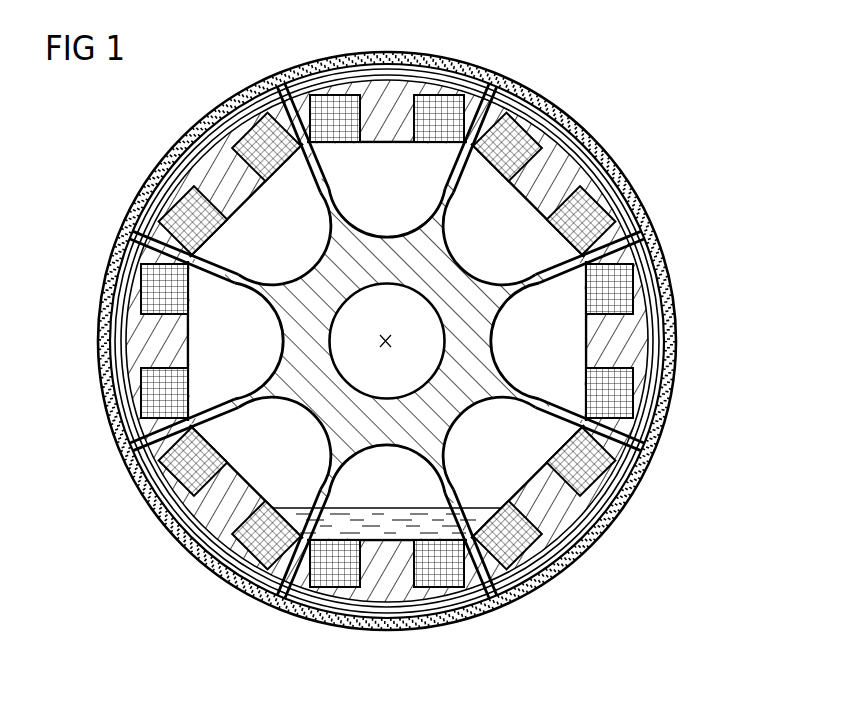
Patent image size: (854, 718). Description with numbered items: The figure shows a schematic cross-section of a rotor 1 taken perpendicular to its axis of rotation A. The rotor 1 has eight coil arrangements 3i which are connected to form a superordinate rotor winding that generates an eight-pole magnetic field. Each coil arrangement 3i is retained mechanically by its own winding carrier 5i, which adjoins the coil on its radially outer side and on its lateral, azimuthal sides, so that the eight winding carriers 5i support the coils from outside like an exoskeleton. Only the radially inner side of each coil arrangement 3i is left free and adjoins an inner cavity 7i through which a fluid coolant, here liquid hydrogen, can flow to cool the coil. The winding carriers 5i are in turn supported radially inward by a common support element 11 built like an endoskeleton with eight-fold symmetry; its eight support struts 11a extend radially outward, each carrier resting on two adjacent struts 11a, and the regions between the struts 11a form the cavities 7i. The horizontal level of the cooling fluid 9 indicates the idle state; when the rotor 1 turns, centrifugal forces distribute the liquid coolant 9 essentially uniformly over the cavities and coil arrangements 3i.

The rotor 1 is at (703, 152).
The coil arrangement 3i is at (591, 213).
The winding carrier 5i is at (556, 167).
The inner cavity 7i is at (508, 243).
The cooling fluid 9 is at (383, 523).
The support element 11 is at (444, 414).
The support strut 11a is at (216, 282).
The axis of rotation A is at (390, 341).